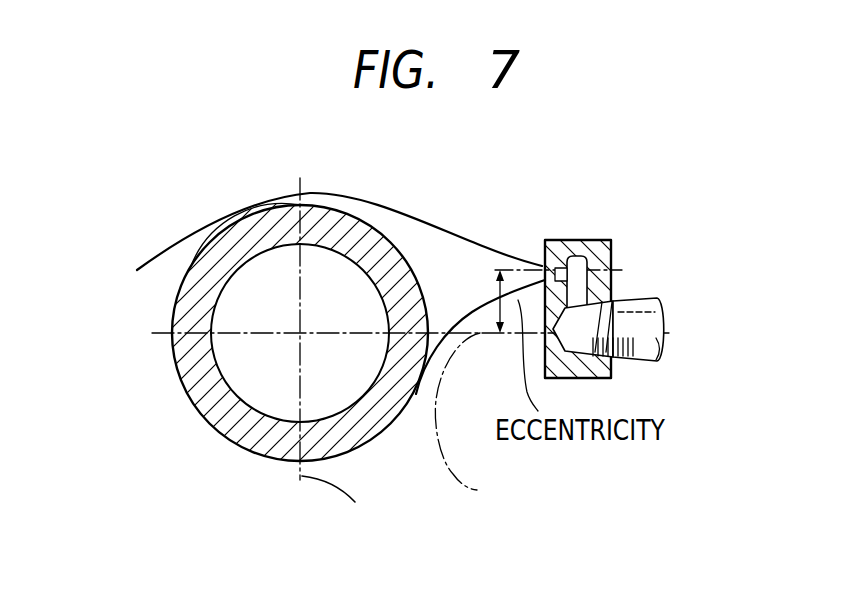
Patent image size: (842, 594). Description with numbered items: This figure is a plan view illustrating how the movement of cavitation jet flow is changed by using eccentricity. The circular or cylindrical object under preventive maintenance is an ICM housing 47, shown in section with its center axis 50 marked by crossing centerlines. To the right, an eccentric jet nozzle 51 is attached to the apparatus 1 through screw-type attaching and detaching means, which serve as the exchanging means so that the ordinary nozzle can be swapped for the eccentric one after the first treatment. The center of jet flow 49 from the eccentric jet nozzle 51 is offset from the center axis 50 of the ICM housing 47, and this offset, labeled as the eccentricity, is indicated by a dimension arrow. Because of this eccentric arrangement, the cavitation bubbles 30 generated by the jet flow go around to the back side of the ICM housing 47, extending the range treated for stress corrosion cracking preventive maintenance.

The apparatus 1 is at (641, 302).
The cavitation bubbles 30 is at (428, 247).
The ICM housing 47 is at (397, 245).
The center of jet flow 49 is at (622, 268).
The center axis 50 is at (355, 502).
The eccentric jet nozzle 51 is at (577, 240).